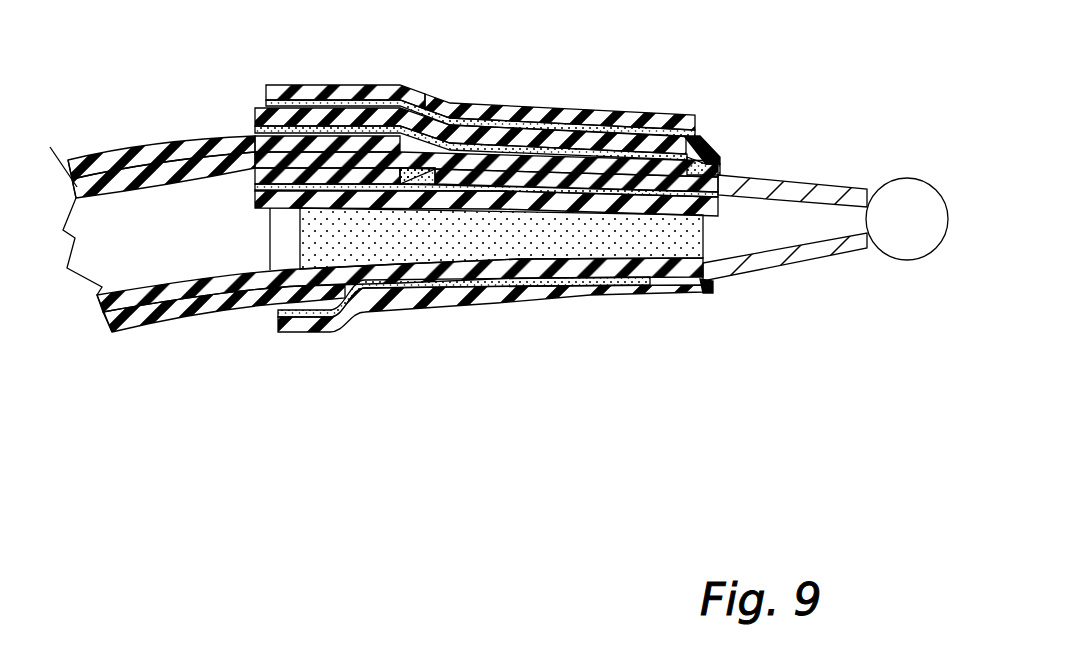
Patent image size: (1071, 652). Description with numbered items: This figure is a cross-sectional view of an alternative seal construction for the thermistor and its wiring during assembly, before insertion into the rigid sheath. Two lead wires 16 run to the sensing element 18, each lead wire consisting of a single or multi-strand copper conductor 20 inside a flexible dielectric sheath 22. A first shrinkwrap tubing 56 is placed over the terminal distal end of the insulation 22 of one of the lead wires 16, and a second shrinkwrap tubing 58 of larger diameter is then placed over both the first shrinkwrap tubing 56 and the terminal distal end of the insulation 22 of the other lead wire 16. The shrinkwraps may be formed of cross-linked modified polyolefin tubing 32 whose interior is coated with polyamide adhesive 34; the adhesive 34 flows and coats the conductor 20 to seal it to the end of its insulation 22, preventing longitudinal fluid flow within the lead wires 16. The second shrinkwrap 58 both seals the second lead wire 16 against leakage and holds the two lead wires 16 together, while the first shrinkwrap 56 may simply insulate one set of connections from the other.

The lead wires 16 is at (97, 157).
The sensing element 18 is at (897, 198).
The conductor 20 is at (130, 167).
The dielectric sheath 22 is at (227, 140).
The cross-linked modified polyolefin tubing 32 is at (310, 333).
The polyamide adhesive 34 is at (450, 290).
The first shrinkwrap tubing 56 is at (722, 150).
The second shrinkwrap tubing 58 is at (505, 112).